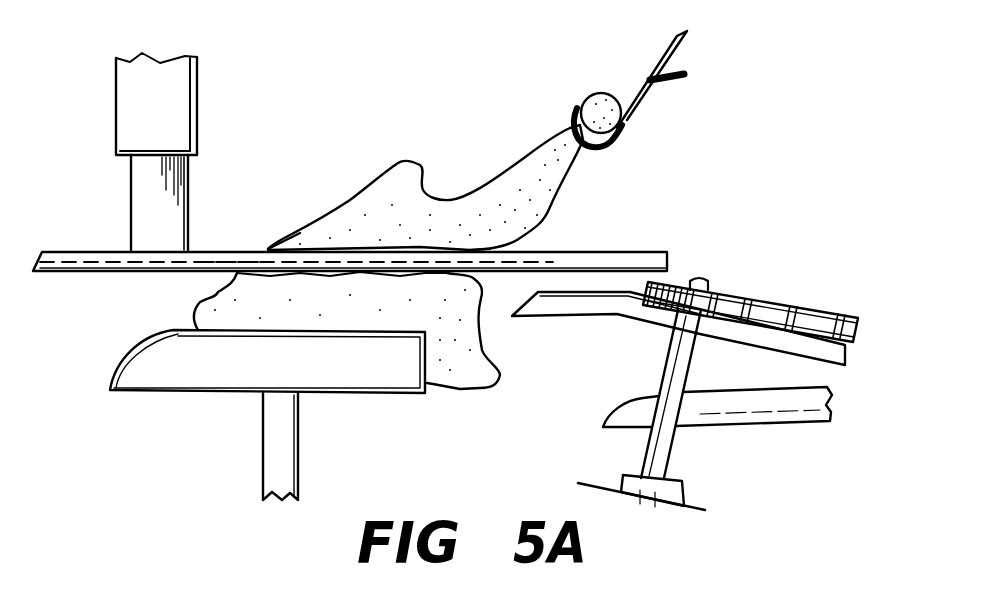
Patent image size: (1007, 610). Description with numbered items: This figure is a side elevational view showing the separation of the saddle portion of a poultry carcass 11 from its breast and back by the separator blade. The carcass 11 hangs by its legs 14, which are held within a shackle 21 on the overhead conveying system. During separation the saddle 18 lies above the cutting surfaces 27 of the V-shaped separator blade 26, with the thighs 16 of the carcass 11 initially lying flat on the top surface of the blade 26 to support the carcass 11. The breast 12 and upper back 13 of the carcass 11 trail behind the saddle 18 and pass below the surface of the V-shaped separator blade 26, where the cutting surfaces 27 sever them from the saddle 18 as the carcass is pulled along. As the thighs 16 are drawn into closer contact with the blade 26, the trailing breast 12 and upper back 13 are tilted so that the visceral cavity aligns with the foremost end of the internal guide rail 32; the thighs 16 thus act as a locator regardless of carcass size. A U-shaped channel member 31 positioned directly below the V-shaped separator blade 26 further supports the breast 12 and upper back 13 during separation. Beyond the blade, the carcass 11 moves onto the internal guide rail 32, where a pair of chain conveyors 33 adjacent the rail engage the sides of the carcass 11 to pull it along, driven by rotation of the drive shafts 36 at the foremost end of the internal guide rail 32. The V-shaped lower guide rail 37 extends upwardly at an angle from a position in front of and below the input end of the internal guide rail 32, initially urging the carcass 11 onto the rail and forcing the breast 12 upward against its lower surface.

The carcass 11 is at (312, 106).
The breast 12 is at (456, 386).
The upper back 13 is at (218, 292).
The legs 14 is at (516, 168).
The thighs 16 is at (528, 236).
The saddle 18 is at (265, 224).
The shackle 21 is at (665, 65).
The V-shaped separator blade 26 is at (620, 262).
The cutting surfaces 27 is at (233, 278).
The U-shaped channel member 31 is at (305, 376).
The internal guide rail 32 is at (543, 318).
The chain conveyors 33 is at (740, 302).
The drive shafts 36 is at (672, 352).
The lower guide rail 37 is at (728, 398).